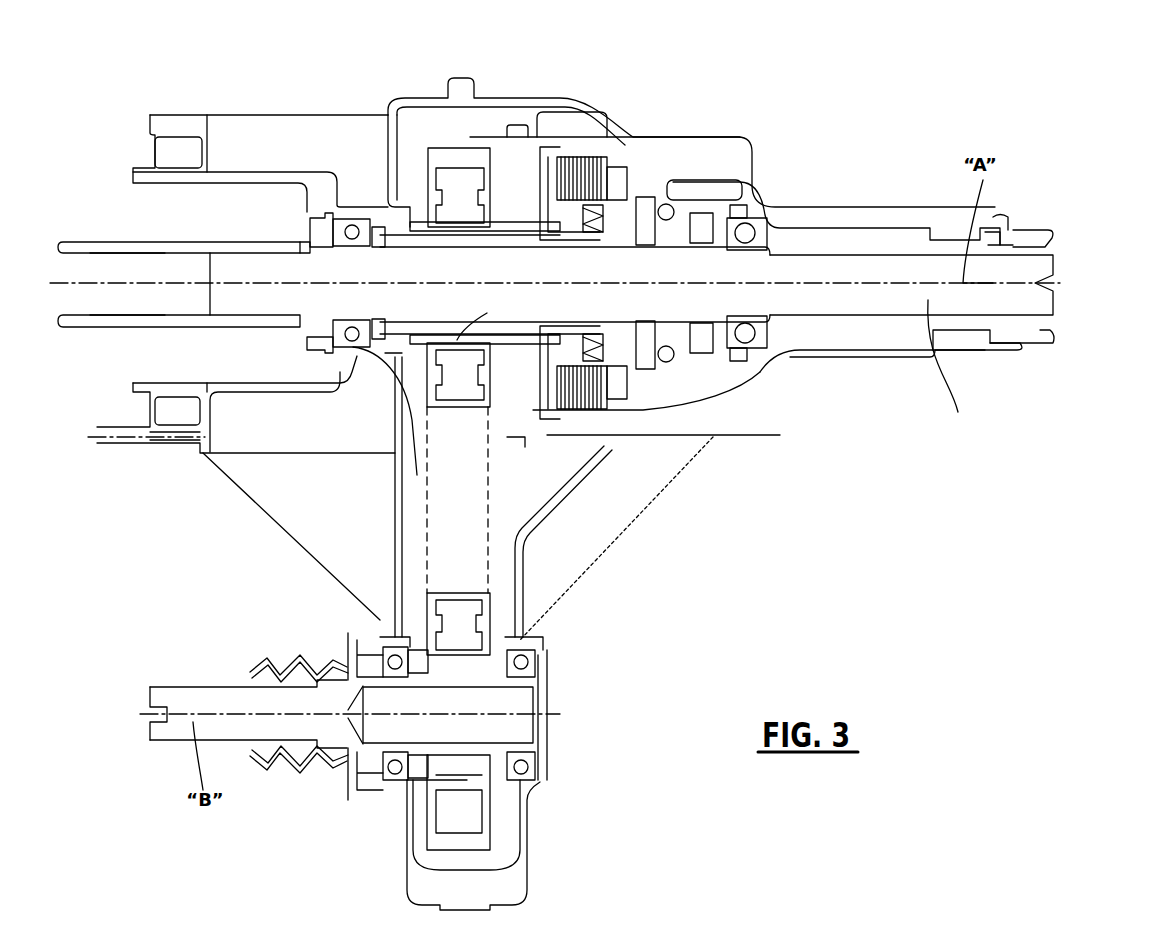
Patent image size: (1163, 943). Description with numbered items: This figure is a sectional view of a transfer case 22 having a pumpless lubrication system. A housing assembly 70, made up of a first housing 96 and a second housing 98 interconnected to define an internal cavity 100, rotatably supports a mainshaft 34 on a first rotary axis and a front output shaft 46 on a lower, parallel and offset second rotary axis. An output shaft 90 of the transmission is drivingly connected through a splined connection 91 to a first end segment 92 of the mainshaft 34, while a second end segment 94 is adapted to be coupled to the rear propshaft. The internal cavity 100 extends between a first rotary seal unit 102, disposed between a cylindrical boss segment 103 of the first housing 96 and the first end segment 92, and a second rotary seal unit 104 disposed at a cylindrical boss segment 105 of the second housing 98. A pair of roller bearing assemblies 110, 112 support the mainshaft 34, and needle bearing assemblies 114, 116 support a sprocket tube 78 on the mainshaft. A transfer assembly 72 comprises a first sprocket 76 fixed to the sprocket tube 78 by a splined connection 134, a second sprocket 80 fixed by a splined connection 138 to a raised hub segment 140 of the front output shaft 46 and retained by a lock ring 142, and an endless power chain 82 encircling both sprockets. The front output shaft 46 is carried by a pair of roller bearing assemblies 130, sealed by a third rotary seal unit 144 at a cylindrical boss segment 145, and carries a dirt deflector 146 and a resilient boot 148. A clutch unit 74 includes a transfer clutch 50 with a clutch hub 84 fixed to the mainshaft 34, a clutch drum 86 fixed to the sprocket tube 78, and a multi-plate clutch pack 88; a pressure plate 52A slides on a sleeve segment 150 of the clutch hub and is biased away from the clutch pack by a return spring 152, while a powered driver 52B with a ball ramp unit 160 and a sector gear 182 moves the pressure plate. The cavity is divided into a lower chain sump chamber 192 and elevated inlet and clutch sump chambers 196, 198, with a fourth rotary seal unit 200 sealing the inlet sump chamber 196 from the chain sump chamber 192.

The transfer case 22 is at (240, 100).
The mainshaft 34 is at (875, 252).
The front output shaft 46 is at (205, 686).
The transfer clutch 50 is at (605, 135).
The pressure plate 52A is at (545, 425).
The powered driver 52B is at (700, 163).
The housing assembly 70 is at (585, 587).
The transfer assembly 72 is at (412, 573).
The clutch unit 74 is at (673, 143).
The first sprocket 76 is at (445, 178).
The sprocket tube 78 is at (387, 200).
The second sprocket 80 is at (470, 817).
The power chain 82 is at (492, 578).
The clutch hub 84 is at (567, 340).
The clutch drum 86 is at (575, 160).
The clutch pack 88 is at (568, 158).
The output shaft 90 is at (80, 244).
The splined connection 91 is at (230, 258).
The first end segment 92 is at (223, 330).
The second end segment 94 is at (949, 368).
The first housing 96 is at (417, 104).
The second housing 98 is at (507, 870).
The internal cavity 100 is at (480, 128).
The first rotary seal unit 102 is at (312, 224).
The cylindrical boss segment 103 is at (313, 210).
The second rotary seal unit 104 is at (1020, 230).
The cylindrical boss segment 105 is at (1000, 218).
The roller bearing assembly 110 is at (340, 355).
The roller bearing assembly 112 is at (750, 226).
The needle bearing assembly 114 is at (398, 322).
The needle bearing assembly 116 is at (510, 250).
The roller bearing assemblies 130 is at (393, 672).
The splined connection 134 is at (504, 314).
The splined connection 138 is at (457, 657).
The raised hub segment 140 is at (447, 760).
The lock ring 142 is at (393, 770).
The third rotary seal unit 144 is at (363, 635).
The cylindrical boss segment 145 is at (367, 780).
The dirt deflector 146 is at (357, 793).
The resilient boot 148 is at (275, 650).
The sleeve segment 150 is at (590, 236).
The return spring 152 is at (645, 375).
The ball ramp unit 160 is at (653, 185).
The sector gear 182 is at (602, 365).
The chain sump chamber 192 is at (503, 840).
The inlet sump chamber 196 is at (383, 360).
The clutch sump chamber 198 is at (607, 380).
The fourth rotary seal unit 200 is at (412, 400).